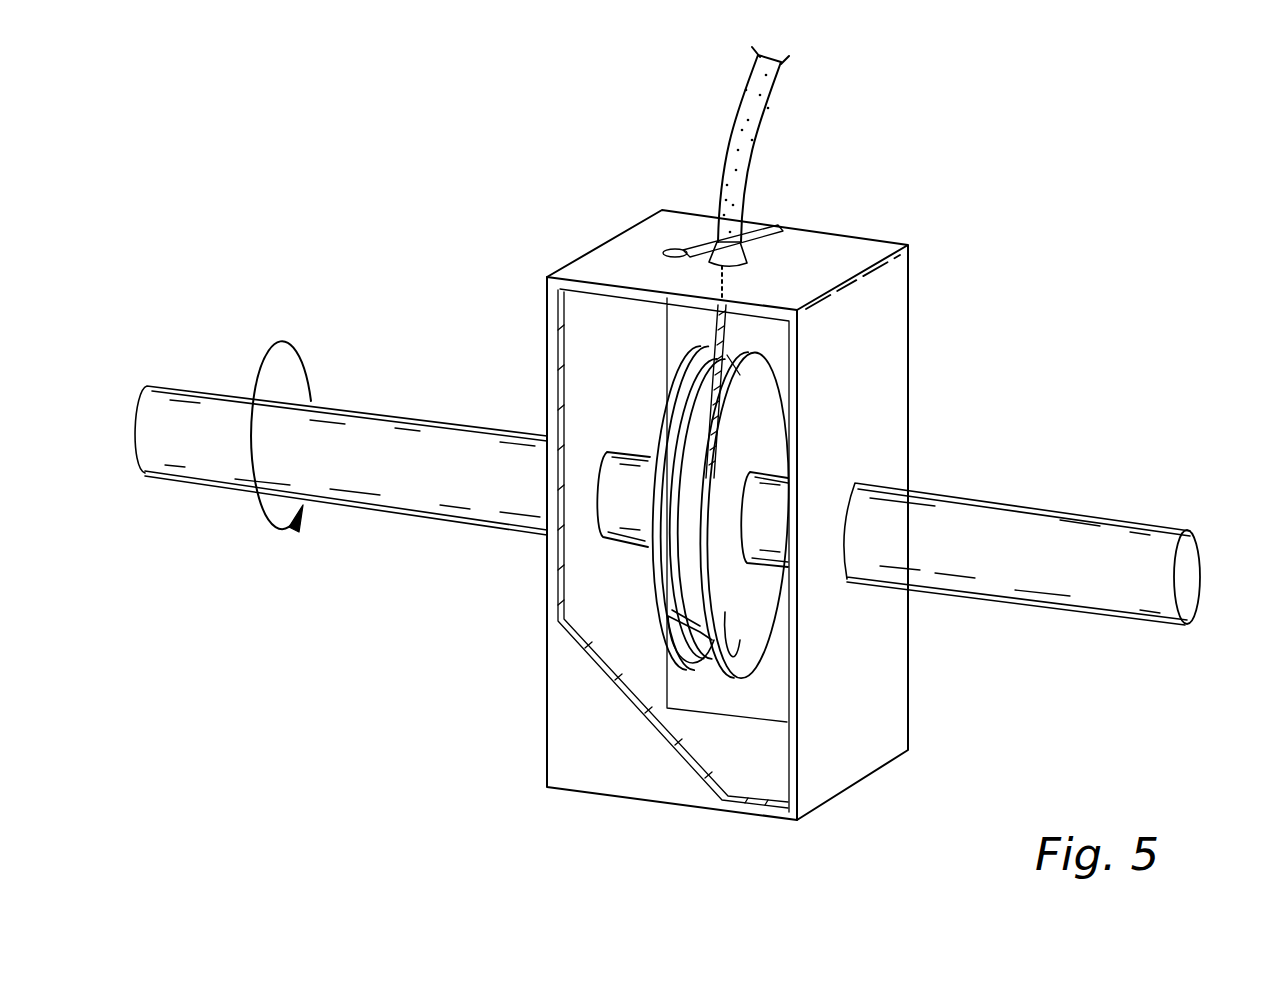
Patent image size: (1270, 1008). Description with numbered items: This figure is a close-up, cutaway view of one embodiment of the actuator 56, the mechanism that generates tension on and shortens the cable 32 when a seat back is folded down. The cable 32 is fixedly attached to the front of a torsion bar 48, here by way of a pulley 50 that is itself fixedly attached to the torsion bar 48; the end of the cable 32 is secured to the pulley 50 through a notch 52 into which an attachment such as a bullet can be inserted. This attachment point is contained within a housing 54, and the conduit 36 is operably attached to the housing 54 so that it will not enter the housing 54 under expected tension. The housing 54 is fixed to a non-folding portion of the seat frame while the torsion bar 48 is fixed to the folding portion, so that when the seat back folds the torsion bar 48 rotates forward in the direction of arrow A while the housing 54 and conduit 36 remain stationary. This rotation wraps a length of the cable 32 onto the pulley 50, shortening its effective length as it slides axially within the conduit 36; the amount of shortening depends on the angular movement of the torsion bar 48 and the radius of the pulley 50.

The cable 32 is at (712, 337).
The conduit 36 is at (744, 87).
The torsion bar 48 is at (1118, 520).
The pulley 50 is at (755, 415).
The notch 52 is at (742, 628).
The housing 54 is at (858, 746).
The actuator 56 is at (671, 517).
The direction of rotation of the torsion bar A is at (274, 364).